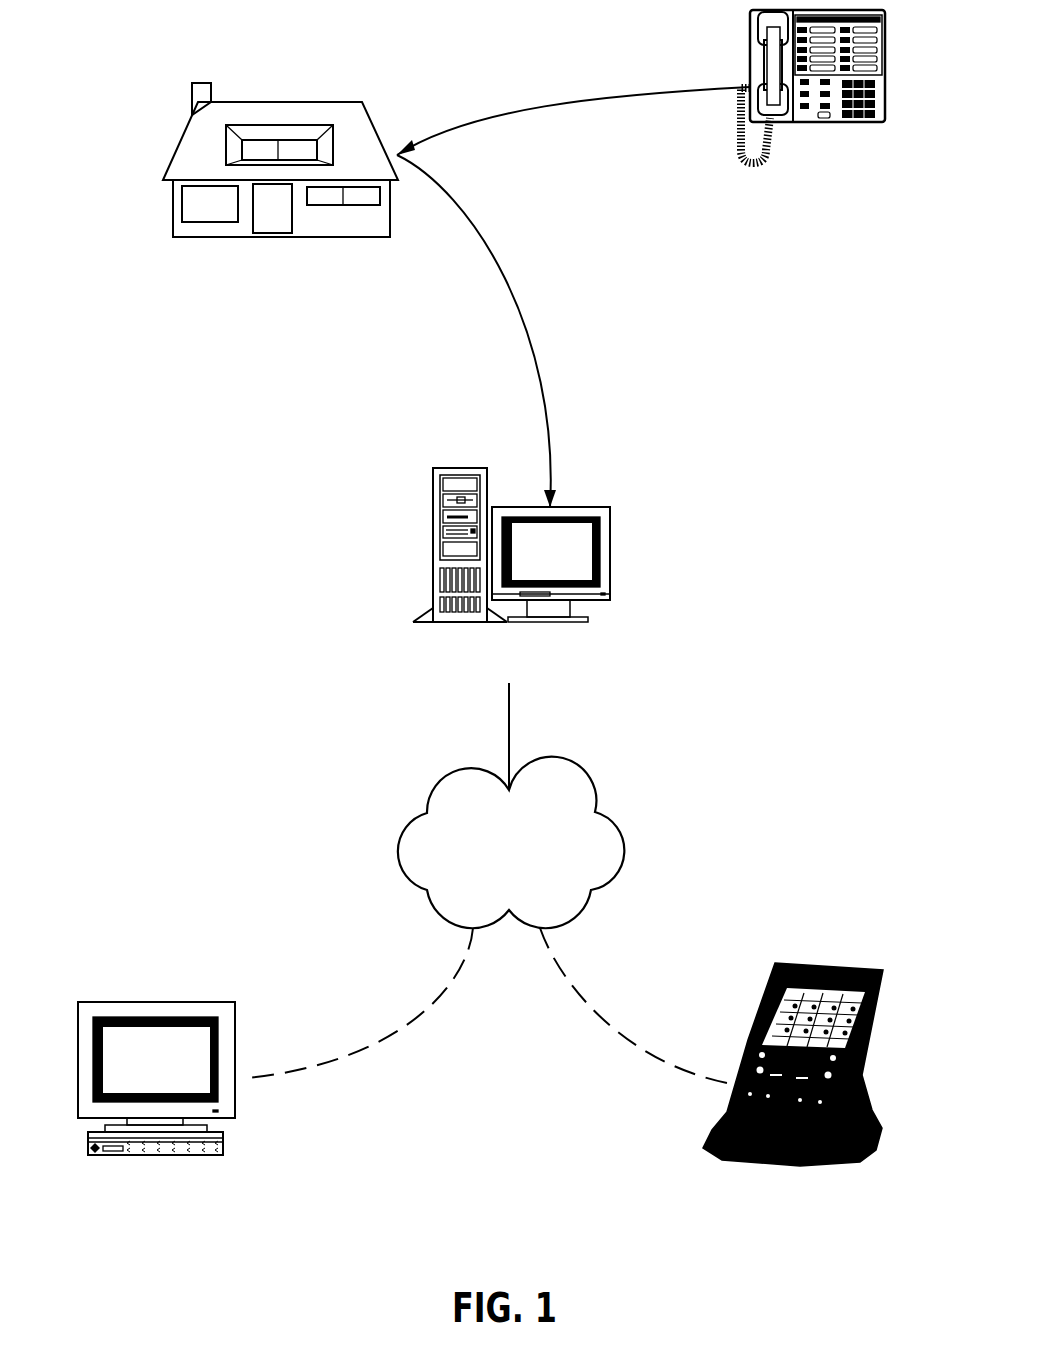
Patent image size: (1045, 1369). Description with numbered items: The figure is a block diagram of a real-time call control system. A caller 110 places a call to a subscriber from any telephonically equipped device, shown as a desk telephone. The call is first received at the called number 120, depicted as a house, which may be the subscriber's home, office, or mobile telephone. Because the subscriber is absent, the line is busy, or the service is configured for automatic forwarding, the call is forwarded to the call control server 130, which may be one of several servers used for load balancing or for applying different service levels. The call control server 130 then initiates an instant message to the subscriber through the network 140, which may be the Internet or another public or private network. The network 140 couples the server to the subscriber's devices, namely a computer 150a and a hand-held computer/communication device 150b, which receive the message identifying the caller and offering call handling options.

The caller 110 is at (834, 86).
The called number 120 is at (280, 188).
The call control server 130 is at (510, 573).
The network 140 is at (511, 843).
The computer 150a is at (156, 1095).
The hand-held computer/communication device 150b is at (793, 1090).